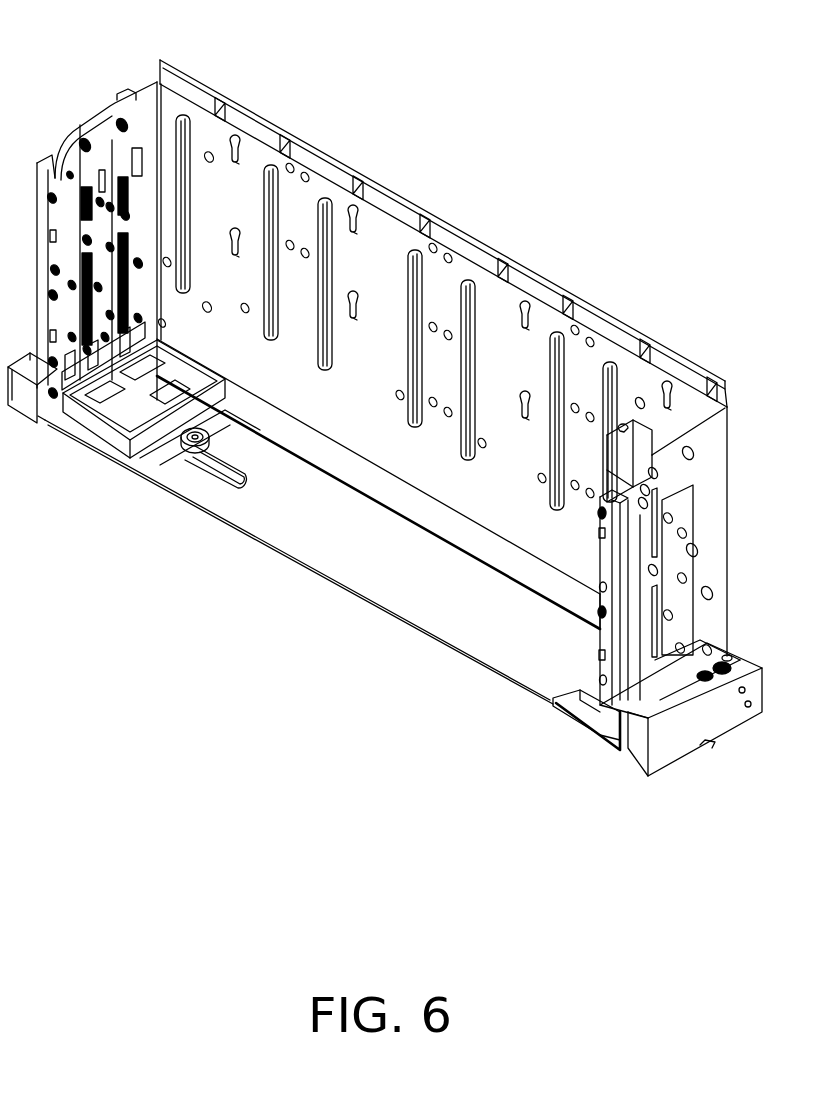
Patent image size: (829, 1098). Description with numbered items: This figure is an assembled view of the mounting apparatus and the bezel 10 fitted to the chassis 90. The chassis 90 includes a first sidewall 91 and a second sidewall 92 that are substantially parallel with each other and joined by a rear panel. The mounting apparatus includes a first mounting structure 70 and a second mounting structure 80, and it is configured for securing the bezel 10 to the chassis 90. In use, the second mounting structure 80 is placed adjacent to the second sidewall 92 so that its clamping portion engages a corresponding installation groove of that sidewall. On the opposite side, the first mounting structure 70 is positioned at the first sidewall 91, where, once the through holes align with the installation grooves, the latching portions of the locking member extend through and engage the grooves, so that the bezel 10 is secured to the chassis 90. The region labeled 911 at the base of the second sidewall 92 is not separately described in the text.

The bezel 10 is at (290, 540).
The first mounting structure 70 is at (100, 422).
The second mounting structure 80 is at (582, 697).
The chassis 90 is at (497, 234).
The first sidewall 91 is at (113, 131).
The second sidewall 92 is at (712, 545).
The base block 911 is at (717, 710).